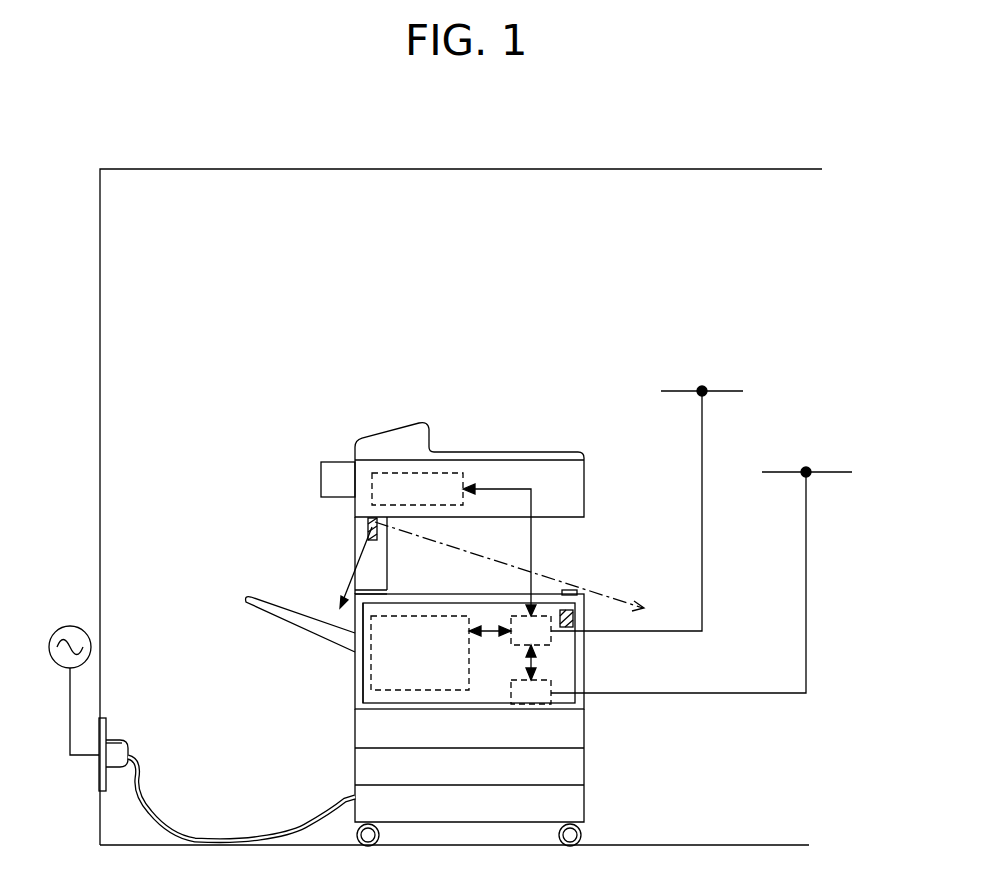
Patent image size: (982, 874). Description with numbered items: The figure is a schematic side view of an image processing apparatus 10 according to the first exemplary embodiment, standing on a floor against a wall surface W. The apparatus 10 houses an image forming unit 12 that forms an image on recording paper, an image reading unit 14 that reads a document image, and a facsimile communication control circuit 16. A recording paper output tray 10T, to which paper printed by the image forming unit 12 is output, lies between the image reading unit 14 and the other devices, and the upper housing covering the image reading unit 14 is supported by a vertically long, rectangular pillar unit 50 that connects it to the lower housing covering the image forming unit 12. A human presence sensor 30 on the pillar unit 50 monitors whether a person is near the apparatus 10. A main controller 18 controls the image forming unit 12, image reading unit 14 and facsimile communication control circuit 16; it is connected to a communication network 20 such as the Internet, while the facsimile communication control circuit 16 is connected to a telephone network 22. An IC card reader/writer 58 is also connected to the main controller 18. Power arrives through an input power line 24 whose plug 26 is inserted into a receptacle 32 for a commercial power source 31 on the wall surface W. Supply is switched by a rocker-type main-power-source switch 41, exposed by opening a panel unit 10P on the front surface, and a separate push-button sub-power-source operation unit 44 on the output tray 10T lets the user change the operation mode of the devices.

The image processing apparatus 10 is at (368, 418).
The recording paper output tray 10T is at (403, 594).
The panel unit 10P is at (363, 682).
The image forming unit 12 is at (386, 690).
The image reading unit 14 is at (372, 505).
The facsimile communication control circuit 16 is at (550, 681).
The main controller 18 is at (552, 645).
The communication network 20 is at (728, 391).
The telephone network 22 is at (835, 472).
The input power line 24 is at (157, 815).
The plug 26 is at (127, 744).
The human presence sensor 30 is at (368, 530).
The commercial power source 31 is at (57, 628).
The receptacle 32 is at (105, 725).
The main-power-source switch 41 is at (575, 613).
The sub-power-source operation unit 44 is at (568, 590).
The pillar unit 50 is at (372, 574).
The IC card reader/writer 58 is at (323, 472).
The wall surface W is at (100, 435).